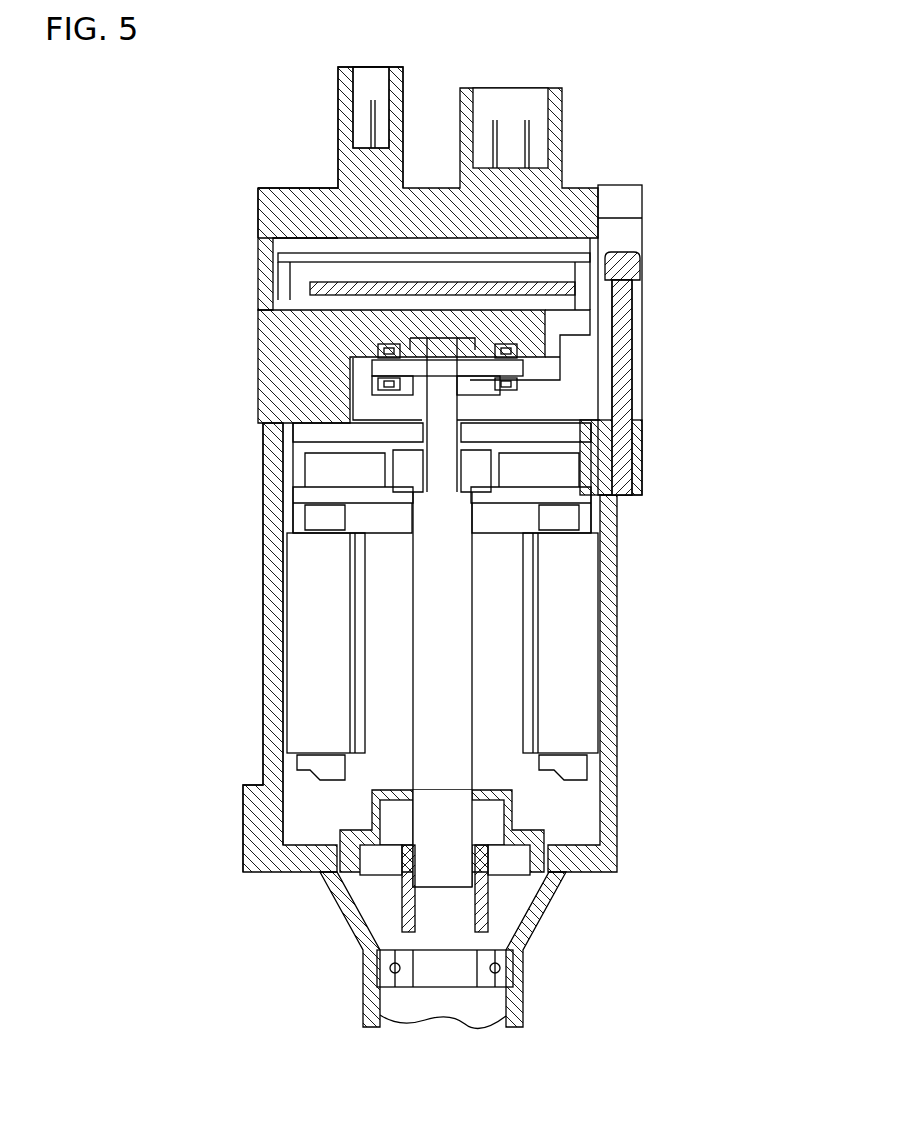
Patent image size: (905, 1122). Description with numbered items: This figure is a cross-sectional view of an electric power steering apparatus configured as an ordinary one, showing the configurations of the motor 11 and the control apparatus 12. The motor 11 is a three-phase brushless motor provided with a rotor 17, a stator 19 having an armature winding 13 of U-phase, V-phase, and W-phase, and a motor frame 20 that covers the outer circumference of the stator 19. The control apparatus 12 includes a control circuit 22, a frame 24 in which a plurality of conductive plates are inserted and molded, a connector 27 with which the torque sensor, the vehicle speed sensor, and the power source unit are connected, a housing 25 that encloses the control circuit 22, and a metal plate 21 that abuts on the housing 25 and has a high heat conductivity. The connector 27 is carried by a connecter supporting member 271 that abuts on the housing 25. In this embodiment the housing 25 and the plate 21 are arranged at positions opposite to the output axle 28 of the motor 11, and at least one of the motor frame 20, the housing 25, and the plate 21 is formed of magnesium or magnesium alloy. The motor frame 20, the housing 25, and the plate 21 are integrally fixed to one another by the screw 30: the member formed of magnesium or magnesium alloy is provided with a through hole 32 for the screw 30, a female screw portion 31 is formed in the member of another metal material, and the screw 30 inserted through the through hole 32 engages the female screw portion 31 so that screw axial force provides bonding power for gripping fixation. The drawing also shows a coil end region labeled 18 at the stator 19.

The motor 11 is at (670, 648).
The control apparatus 12 is at (676, 307).
The armature winding 13 is at (530, 960).
The rotor 17 is at (350, 600).
The coil 18 is at (565, 765).
The stator 19 is at (560, 565).
The motor frame 20 is at (262, 680).
The plate 21 is at (275, 372).
The control circuit 22 is at (552, 262).
The frame 24 is at (258, 300).
The housing 25 is at (258, 262).
The connector 27 is at (372, 92).
The connecter supporting member 271 is at (312, 200).
The output axle 28 is at (440, 850).
The screw 30 is at (638, 264).
The female screw portion 31 is at (643, 413).
The through hole 32 is at (643, 365).